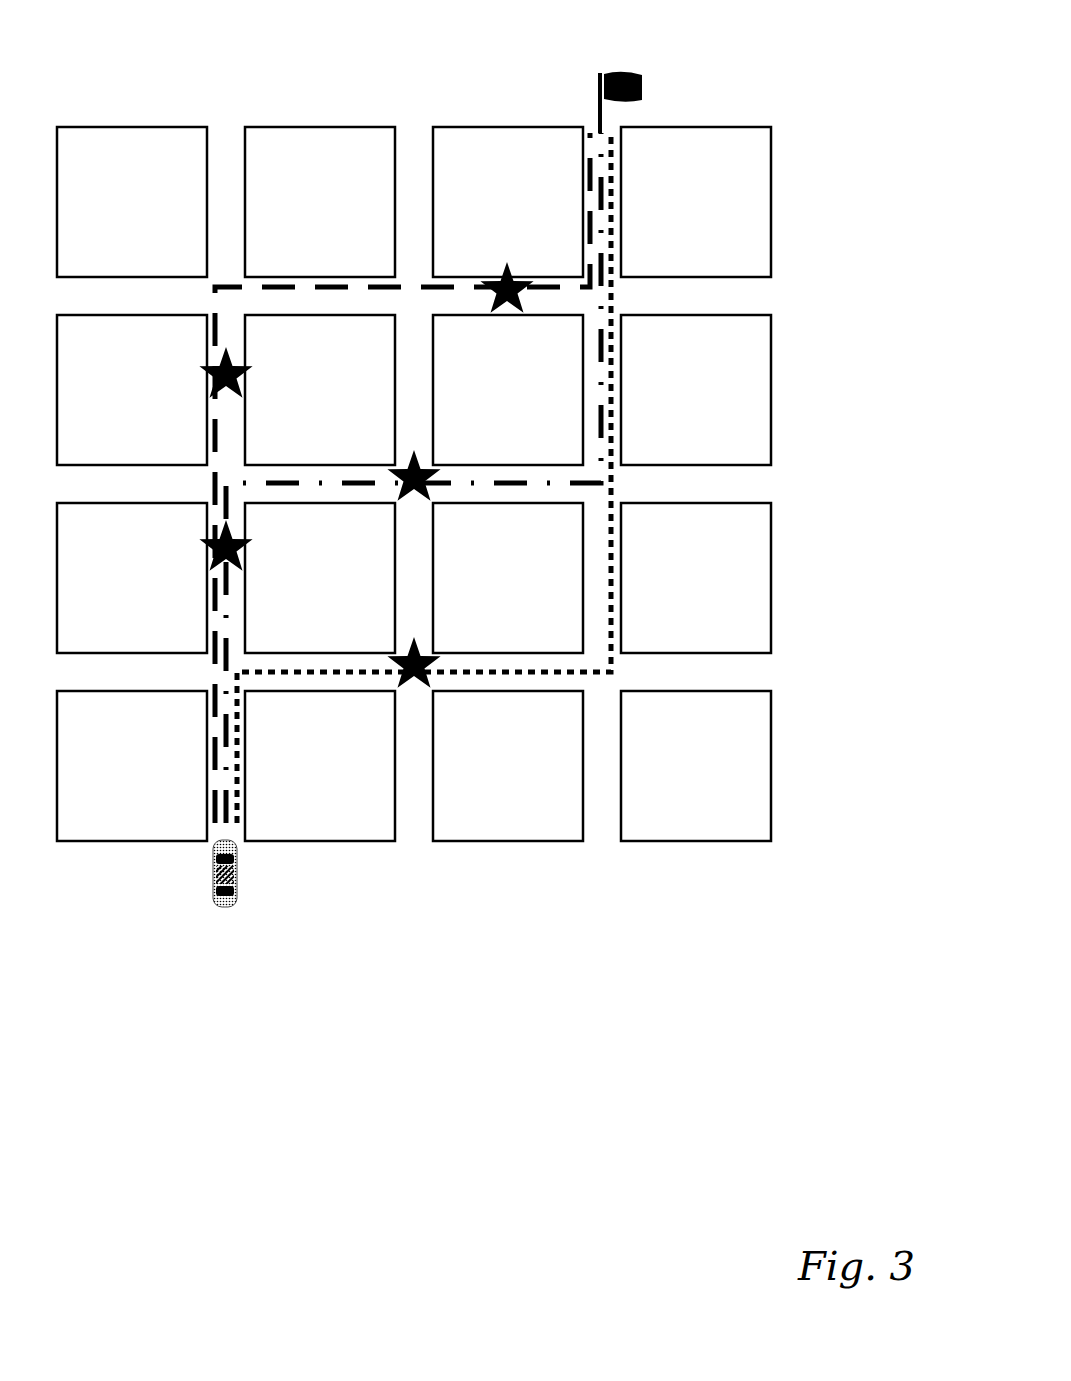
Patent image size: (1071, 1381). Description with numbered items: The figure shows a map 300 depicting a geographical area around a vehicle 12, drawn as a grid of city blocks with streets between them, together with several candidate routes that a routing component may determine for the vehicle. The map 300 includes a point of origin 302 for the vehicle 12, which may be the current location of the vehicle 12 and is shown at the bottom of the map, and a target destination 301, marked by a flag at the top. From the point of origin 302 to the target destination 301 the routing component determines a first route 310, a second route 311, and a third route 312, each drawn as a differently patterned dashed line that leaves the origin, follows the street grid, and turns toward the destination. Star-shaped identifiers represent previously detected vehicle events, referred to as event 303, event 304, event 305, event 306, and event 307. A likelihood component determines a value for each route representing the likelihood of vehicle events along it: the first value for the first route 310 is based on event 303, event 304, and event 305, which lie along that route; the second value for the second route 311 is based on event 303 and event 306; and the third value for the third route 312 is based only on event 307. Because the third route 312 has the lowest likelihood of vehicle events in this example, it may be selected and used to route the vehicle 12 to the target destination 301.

The map 300 is at (856, 56).
The target destination 301 is at (598, 99).
The point of origin 302 is at (222, 831).
The event 303 is at (204, 546).
The event 304 is at (207, 371).
The event 305 is at (491, 312).
The event 306 is at (396, 487).
The event 307 is at (398, 676).
The first route 310 is at (214, 741).
The second route 311 is at (230, 483).
The third route 312 is at (252, 671).
The vehicle 12 is at (232, 888).